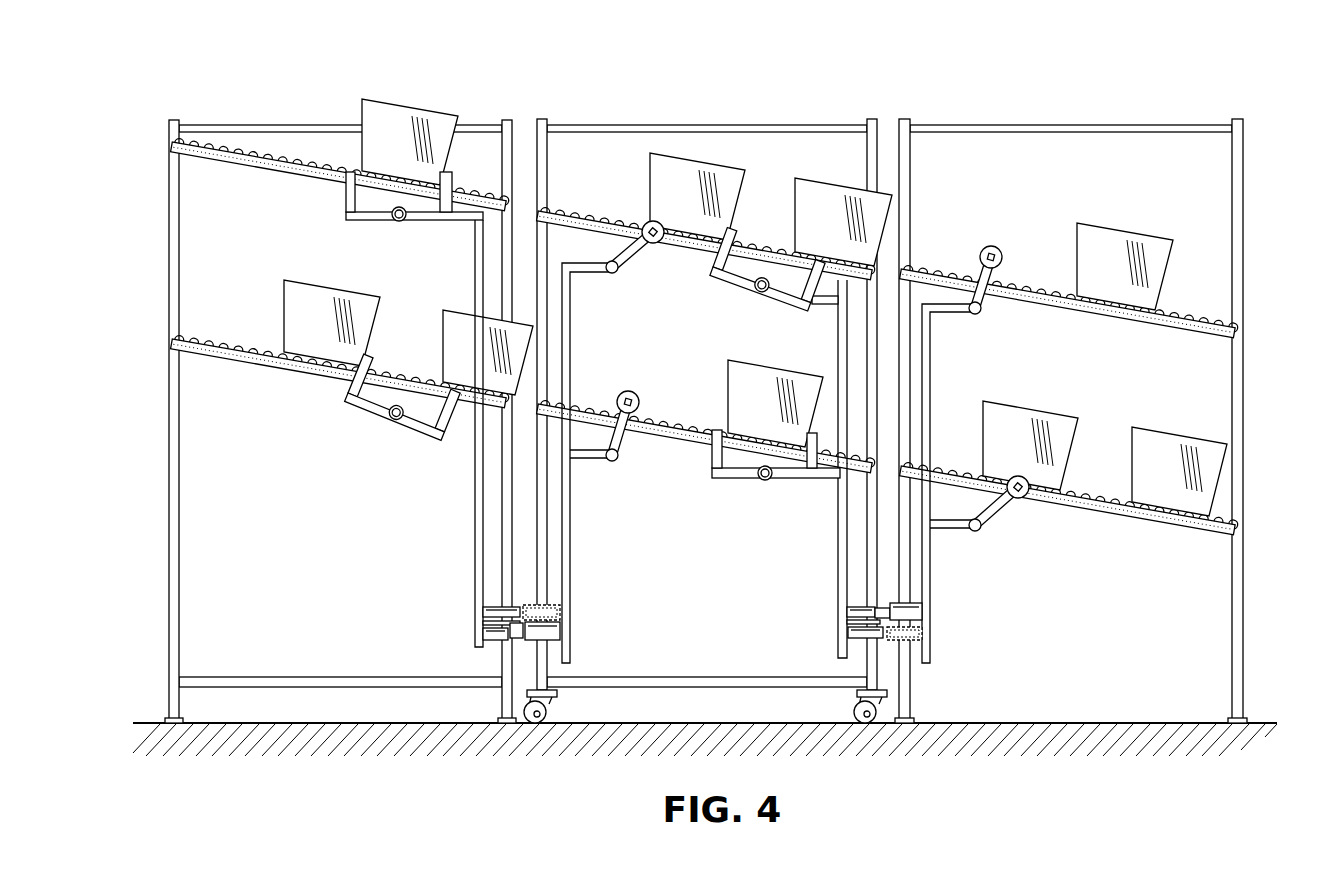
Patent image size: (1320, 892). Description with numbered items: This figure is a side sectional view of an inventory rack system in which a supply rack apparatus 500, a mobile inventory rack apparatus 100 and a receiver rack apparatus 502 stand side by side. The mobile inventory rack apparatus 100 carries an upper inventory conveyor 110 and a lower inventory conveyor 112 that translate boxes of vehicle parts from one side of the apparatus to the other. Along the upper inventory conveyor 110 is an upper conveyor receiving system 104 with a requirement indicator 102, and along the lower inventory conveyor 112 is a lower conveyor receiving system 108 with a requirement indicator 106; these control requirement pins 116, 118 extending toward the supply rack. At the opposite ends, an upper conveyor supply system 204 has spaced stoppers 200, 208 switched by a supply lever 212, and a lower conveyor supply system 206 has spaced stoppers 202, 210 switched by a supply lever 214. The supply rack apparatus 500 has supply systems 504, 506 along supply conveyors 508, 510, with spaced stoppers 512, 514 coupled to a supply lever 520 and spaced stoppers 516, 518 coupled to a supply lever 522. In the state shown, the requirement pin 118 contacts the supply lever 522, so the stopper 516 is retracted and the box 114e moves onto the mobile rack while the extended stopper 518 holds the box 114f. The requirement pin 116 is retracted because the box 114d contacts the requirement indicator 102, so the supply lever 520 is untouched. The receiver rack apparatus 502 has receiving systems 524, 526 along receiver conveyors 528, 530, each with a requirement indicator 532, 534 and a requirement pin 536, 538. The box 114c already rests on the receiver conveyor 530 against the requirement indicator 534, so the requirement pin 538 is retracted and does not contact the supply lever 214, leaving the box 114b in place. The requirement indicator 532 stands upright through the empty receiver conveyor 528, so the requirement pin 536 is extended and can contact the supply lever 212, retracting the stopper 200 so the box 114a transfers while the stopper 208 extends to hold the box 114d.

The mobile inventory rack apparatus 100 is at (784, 108).
The requirement indicator 102 is at (640, 255).
The upper conveyor receiving system 104 is at (618, 280).
The requirement indicator 106 is at (628, 438).
The lower conveyor receiving system 108 is at (616, 470).
The upper inventory conveyor 110 is at (597, 232).
The lower inventory conveyor 112 is at (585, 440).
The box 114a is at (827, 180).
The box 114b is at (742, 360).
The box 114c is at (1058, 410).
The box 114d is at (652, 158).
The box 114e is at (452, 310).
The box 114f is at (302, 280).
The requirement pin 116 is at (545, 605).
The requirement pin 118 is at (548, 640).
The stopper 200 is at (815, 255).
The stopper 202 is at (810, 432).
The upper conveyor supply system 204 is at (767, 239).
The lower conveyor supply system 206 is at (748, 438).
The stopper 208 is at (740, 225).
The stopper 210 is at (714, 452).
The supply lever 212 is at (848, 607).
The supply lever 214 is at (848, 633).
The supply rack apparatus 500 is at (216, 116).
The receiver rack apparatus 502 is at (1122, 100).
The supply system 504 is at (384, 201).
The supply system 506 is at (412, 414).
The supply conveyor 508 is at (202, 163).
The supply conveyor 510 is at (208, 356).
The stopper 512 is at (448, 182).
The stopper 514 is at (346, 195).
The stopper 516 is at (458, 435).
The stopper 518 is at (368, 360).
The supply lever 520 is at (488, 607).
The supply lever 522 is at (492, 640).
The receiving system 524 is at (975, 320).
The receiving system 526 is at (982, 540).
The receiver conveyor 528 is at (930, 265).
The receiver conveyor 530 is at (1107, 515).
The requirement indicator 532 is at (996, 268).
The requirement indicator 534 is at (1000, 510).
The requirement pin 536 is at (917, 604).
The requirement pin 538 is at (922, 640).